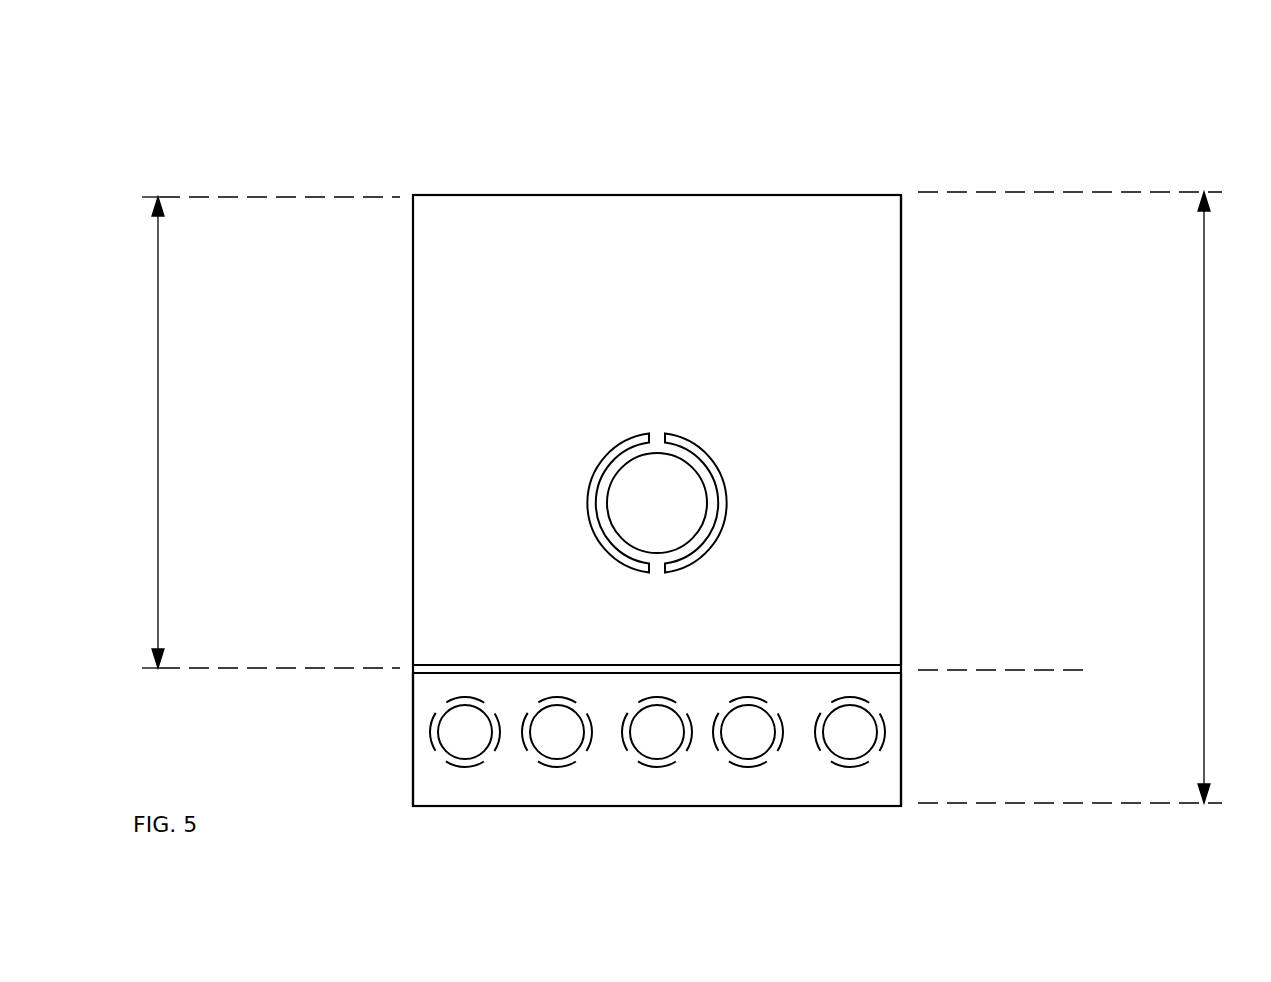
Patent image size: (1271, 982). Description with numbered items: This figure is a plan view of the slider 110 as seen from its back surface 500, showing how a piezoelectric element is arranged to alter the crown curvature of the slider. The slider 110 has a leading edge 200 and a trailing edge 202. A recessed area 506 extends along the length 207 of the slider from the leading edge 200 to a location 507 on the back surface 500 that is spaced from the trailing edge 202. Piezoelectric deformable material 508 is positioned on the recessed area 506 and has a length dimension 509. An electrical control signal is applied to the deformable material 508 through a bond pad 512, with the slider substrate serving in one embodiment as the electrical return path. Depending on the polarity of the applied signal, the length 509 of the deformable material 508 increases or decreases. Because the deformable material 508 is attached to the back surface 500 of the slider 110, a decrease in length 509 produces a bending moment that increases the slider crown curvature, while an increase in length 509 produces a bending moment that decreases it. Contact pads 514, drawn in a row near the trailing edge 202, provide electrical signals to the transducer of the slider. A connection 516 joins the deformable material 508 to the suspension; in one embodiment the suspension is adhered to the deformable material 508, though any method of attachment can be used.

The slider 110 is at (478, 143).
The leading edge 200 is at (580, 195).
The trailing edge 202 is at (465, 807).
The length 207 is at (1205, 543).
The back surface 500 is at (788, 308).
The recessed area 506 is at (540, 312).
The location 507 is at (1000, 670).
The piezoelectric deformable material 508 is at (853, 402).
The length dimension 509 is at (160, 452).
The bond pad 512 is at (631, 480).
The contact pads 514 is at (465, 742).
The connection 516 is at (588, 521).